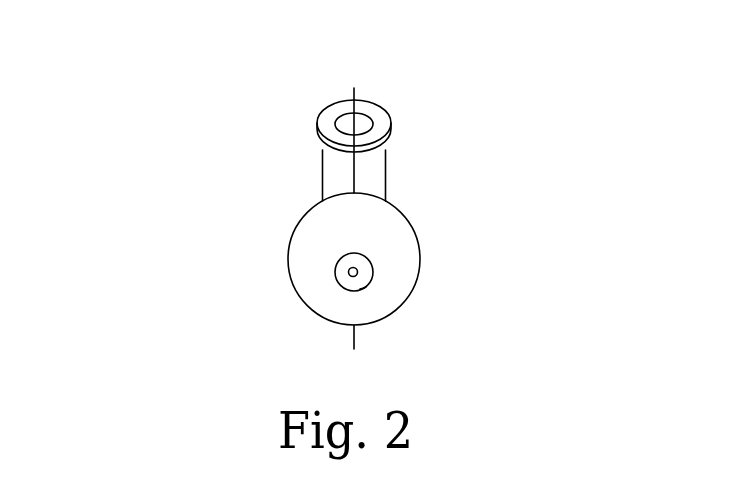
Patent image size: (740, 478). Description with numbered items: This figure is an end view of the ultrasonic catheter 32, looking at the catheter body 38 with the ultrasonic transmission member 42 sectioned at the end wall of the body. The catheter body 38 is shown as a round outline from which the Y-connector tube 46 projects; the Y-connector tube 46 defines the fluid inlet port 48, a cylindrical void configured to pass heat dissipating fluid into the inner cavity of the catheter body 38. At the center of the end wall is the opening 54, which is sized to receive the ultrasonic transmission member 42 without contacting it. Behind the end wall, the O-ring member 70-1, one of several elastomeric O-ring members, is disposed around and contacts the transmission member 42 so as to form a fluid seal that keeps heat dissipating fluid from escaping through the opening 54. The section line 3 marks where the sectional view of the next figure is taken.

The ultrasonic catheter 32 is at (122, 170).
The catheter body 38 is at (413, 223).
The ultrasonic transmission member 42 is at (349, 275).
The Y-connector tube 46 is at (386, 175).
The fluid inlet port 48 is at (370, 115).
The opening 54 is at (335, 267).
The O-ring member 70-1 is at (366, 287).
The section line 3- 3 is at (354, 88).